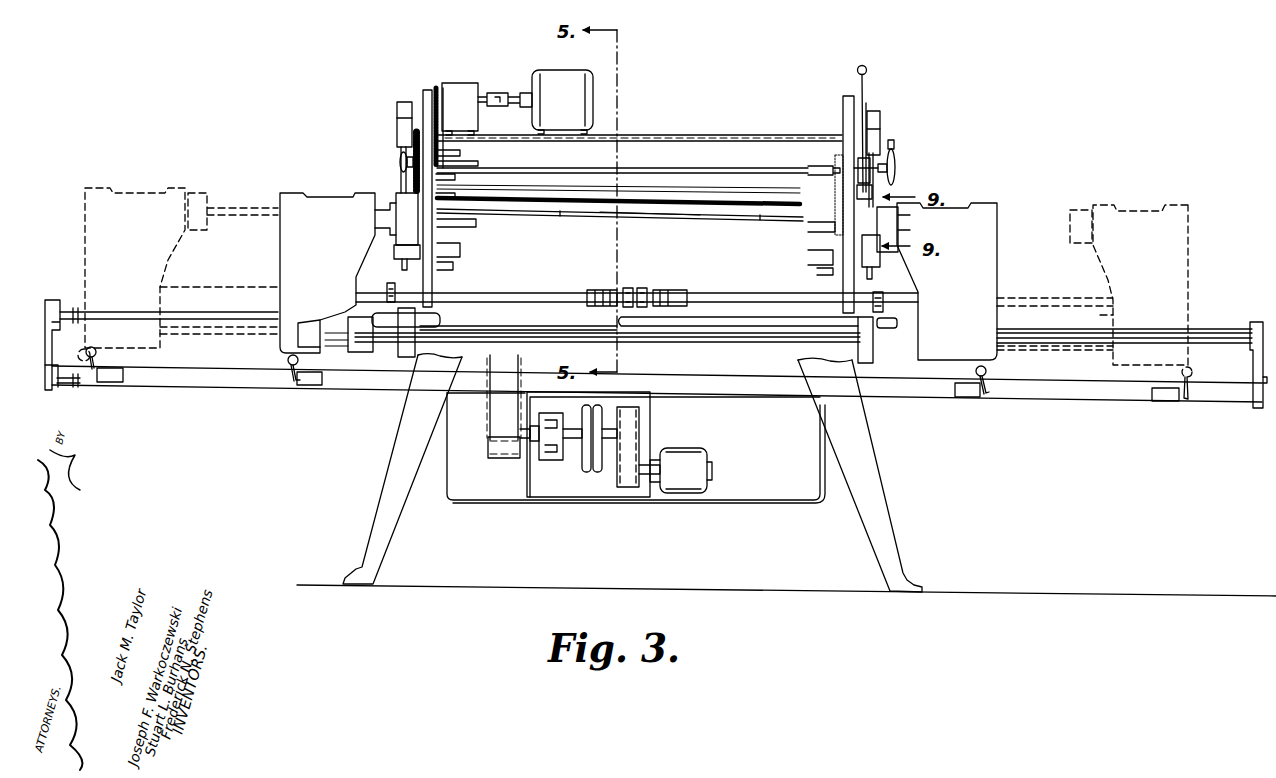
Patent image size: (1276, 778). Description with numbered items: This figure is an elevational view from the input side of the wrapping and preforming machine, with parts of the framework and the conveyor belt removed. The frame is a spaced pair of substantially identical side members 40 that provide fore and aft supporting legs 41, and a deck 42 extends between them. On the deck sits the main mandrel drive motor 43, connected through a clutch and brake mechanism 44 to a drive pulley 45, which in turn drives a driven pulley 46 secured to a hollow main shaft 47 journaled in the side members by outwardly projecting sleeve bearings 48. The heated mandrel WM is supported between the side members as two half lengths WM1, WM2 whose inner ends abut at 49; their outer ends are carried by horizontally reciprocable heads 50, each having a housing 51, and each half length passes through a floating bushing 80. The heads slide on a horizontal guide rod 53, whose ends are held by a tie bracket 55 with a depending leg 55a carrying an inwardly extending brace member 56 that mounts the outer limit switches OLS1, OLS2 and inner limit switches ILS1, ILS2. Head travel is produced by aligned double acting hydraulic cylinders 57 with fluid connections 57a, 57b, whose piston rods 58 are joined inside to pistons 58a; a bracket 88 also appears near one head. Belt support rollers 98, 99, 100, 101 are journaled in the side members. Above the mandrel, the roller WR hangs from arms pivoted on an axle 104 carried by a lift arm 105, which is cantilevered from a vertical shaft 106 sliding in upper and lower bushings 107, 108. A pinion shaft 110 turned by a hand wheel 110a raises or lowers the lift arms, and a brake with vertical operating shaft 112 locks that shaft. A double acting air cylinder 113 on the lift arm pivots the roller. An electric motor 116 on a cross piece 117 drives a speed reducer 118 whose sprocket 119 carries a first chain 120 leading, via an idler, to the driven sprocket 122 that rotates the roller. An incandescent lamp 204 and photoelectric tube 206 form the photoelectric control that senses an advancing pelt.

The side members 40 is at (440, 236).
The supporting legs 41 is at (407, 443).
The deck 42 is at (777, 503).
The main mandrel drive motor 43 is at (677, 458).
The clutch and brake mechanism 44 is at (577, 478).
The drive pulley 45 is at (490, 438).
The driven pulley 46 is at (492, 362).
The hollow main shaft 47 is at (540, 332).
The sleeve bearings 48 is at (383, 338).
The abutment of mandrel inner ends 49 is at (635, 216).
The reciprocable heads 50 is at (298, 187).
The housing 51 is at (326, 196).
The guide rod 53 is at (723, 342).
The tie bracket 55 is at (47, 304).
The depending leg 55a is at (48, 381).
The brace member 56 is at (207, 378).
The double acting hydraulic cylinders 57 is at (507, 289).
The fluid connection 57a is at (627, 287).
The fluid connection 57b is at (438, 292).
The piston rods 58 is at (373, 288).
The pistons 58a is at (675, 290).
The floating bushing 80 is at (898, 222).
The foot 88 is at (338, 327).
The support roller 98 is at (462, 252).
The support roller 99 is at (482, 203).
The support roller 100 is at (455, 266).
The support roller 101 is at (476, 224).
The axle 104 is at (399, 163).
The lift arm 105 is at (400, 135).
The vertical shaft 106 is at (399, 177).
The upper bushing 107 is at (392, 210).
The lower bushing 108 is at (400, 248).
The shaft 110 is at (479, 163).
The hand wheel 110a is at (898, 164).
The vertical operating shaft 112 is at (866, 85).
The double acting air cylinder 113 is at (405, 101).
The electric motor 116 is at (565, 73).
The cross piece 117 is at (685, 128).
The speed reducer 118 is at (462, 83).
The sprocket 119 is at (430, 88).
The first chain 120 is at (455, 154).
The driven sprocket 122 is at (443, 176).
The incandescent lamp 204 is at (810, 168).
The photoelectric tube 206 is at (503, 195).
The roller WR is at (742, 168).
The heated mandrel WM is at (688, 230).
The mandrel half length WM1 is at (557, 231).
The mandrel half length WM2 is at (760, 233).
The outer limit switch OLS1 is at (115, 380).
The outer limit switch OLS2 is at (1167, 401).
The inner limit switch ILS1 is at (307, 386).
The inner limit switch ILS2 is at (973, 394).